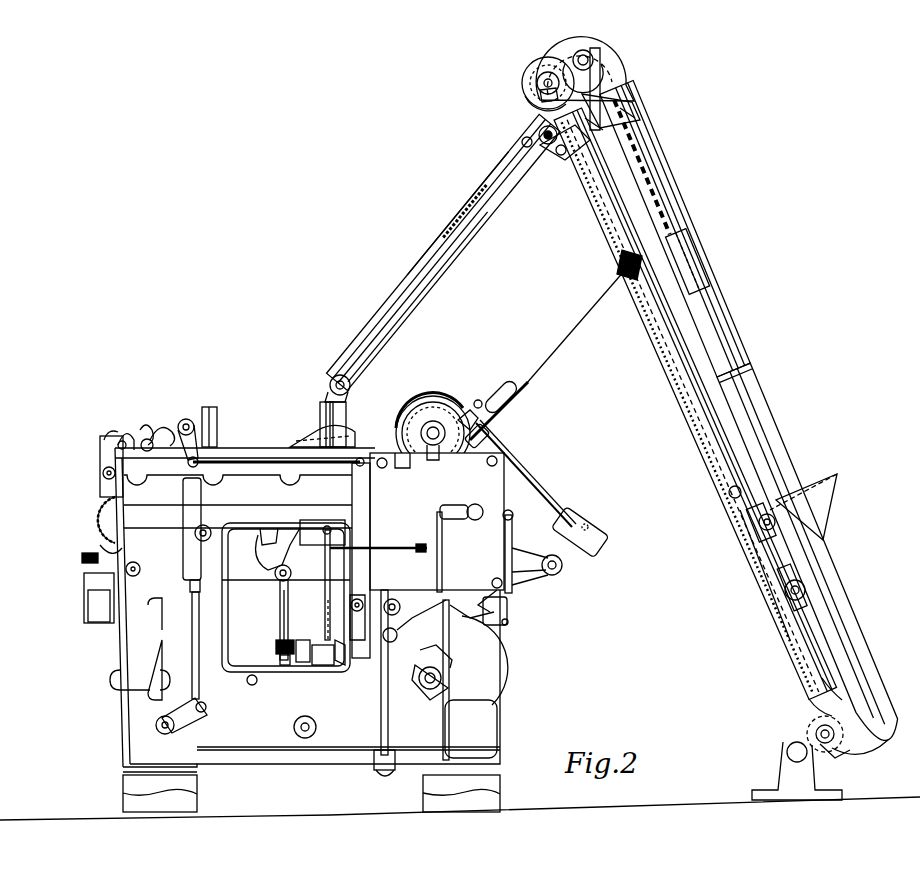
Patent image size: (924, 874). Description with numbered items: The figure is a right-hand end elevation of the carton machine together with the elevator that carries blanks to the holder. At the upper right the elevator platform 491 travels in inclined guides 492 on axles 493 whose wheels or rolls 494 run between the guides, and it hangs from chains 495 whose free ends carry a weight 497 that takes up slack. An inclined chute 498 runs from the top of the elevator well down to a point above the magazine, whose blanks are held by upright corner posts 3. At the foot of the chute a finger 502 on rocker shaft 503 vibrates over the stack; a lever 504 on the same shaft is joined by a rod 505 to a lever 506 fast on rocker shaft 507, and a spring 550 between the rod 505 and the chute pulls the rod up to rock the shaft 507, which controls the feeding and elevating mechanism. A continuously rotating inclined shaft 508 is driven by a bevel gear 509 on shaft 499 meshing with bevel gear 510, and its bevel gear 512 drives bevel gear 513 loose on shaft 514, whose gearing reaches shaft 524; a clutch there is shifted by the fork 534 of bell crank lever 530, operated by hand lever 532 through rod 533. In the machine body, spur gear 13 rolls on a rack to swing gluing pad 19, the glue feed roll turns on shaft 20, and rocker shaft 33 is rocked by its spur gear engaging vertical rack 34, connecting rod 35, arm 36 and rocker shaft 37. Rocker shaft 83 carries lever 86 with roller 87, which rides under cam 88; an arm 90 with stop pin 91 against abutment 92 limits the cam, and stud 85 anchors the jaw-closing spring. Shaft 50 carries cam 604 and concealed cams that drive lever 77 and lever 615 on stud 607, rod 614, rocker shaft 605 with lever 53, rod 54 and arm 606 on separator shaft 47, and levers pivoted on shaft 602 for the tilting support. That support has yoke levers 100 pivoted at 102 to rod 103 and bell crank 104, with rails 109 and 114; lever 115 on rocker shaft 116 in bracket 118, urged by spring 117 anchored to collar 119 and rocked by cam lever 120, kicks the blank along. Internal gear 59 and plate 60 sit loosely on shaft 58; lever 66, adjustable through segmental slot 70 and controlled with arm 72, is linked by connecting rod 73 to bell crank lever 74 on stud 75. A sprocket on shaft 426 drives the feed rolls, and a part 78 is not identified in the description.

The shaft 524 is at (577, 57).
The fork 534 is at (604, 62).
The bell crank lever 530 is at (626, 93).
The shaft 514 is at (530, 75).
The bevel gear 513 is at (540, 94).
The bevel gear 512 is at (530, 103).
The chains 495 is at (648, 160).
The weight 497 is at (700, 265).
The bevel gear 510 is at (876, 752).
The rod 533 is at (712, 456).
The shaft 508 is at (805, 690).
The bevel gear 509 is at (810, 725).
The shaft 499 is at (816, 734).
The platform 491 is at (830, 498).
The hand lever 532 is at (729, 494).
The wheels or rolls 494 is at (776, 521).
The axles 493 is at (752, 525).
The inclined guides 492 is at (760, 572).
The inclined chute 498 is at (445, 275).
The spring 550 is at (450, 228).
The rod 505 is at (392, 320).
The lever 506 is at (550, 146).
The rocker shaft 507 is at (572, 150).
The rocker shaft 503 is at (352, 385).
The lever 504 is at (326, 396).
The finger 502 is at (318, 432).
The connecting rod 73 is at (540, 492).
The lever 53 is at (362, 506).
The rod 54 is at (258, 468).
The arm 606 is at (188, 464).
The rocker shaft 47 is at (192, 420).
The upright corner posts 3 is at (217, 412).
The arm 90 is at (175, 430).
The stop pin 91 is at (147, 428).
The fixed abutment 92 is at (152, 440).
The cam 88 is at (124, 438).
The lever 86 is at (106, 436).
The roller 87 is at (100, 434).
The rocker shaft 83 is at (120, 447).
The stud 85 is at (103, 474).
The spur gear 13 is at (95, 515).
The gluing pad 19 is at (102, 540).
The shaft 20 is at (133, 562).
The rocker shaft 33 is at (195, 536).
The vertical rack 34 is at (190, 582).
The connecting rod 35 is at (192, 622).
The arm 36 is at (190, 722).
The rocker shaft 37 is at (160, 732).
The shaft 426 is at (296, 728).
The rails 109 is at (312, 526).
The yoke levers 100 is at (262, 556).
The rails 114 is at (275, 574).
The pivot 102 is at (280, 590).
The rod 103 is at (280, 618).
The lever 115 is at (326, 597).
The rocker shaft 116 is at (314, 620).
The collar 119 is at (276, 645).
The bell crank lever 104 is at (278, 660).
The spring 117 is at (300, 660).
The bracket 118 is at (318, 666).
The lever 120 is at (342, 667).
The plate 60 is at (396, 420).
The shaft 58 is at (424, 428).
The segmental slot 70 is at (458, 404).
The internal gear 59 is at (412, 453).
The lever 66 is at (468, 410).
The arm 72 is at (512, 392).
The rod 614 is at (512, 540).
The bell crank lever 74 is at (580, 555).
The stud 75 is at (556, 575).
The lever 615 is at (480, 600).
The block 78 is at (508, 613).
The lever 77 is at (488, 636).
The cam 604 is at (492, 690).
The shaft 50 is at (418, 679).
The shaft 602 is at (400, 608).
The stud 607 is at (398, 633).
The rocker shaft 605 is at (363, 617).